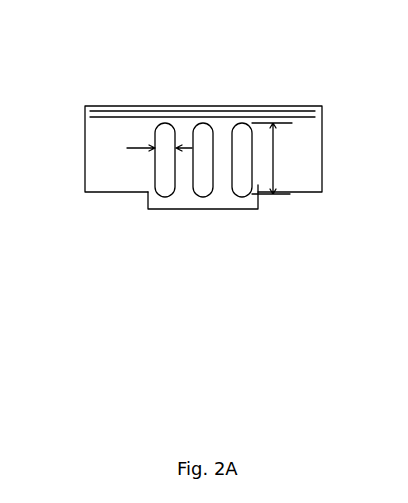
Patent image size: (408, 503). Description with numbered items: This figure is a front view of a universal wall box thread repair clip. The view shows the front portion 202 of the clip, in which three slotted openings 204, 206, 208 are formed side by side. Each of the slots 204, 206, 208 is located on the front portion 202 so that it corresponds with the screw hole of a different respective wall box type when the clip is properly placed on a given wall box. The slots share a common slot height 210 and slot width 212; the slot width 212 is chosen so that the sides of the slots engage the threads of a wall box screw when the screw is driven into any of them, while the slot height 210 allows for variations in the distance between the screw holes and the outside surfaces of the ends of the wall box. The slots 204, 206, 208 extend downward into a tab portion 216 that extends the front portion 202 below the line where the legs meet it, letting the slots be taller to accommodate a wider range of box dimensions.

The front portion 202 is at (110, 175).
The slotted opening 204 is at (205, 125).
The slotted opening 206 is at (165, 125).
The slotted opening 208 is at (242, 123).
The slot height 210 is at (275, 160).
The slot width 212 is at (133, 148).
The tab portion 216 is at (245, 208).